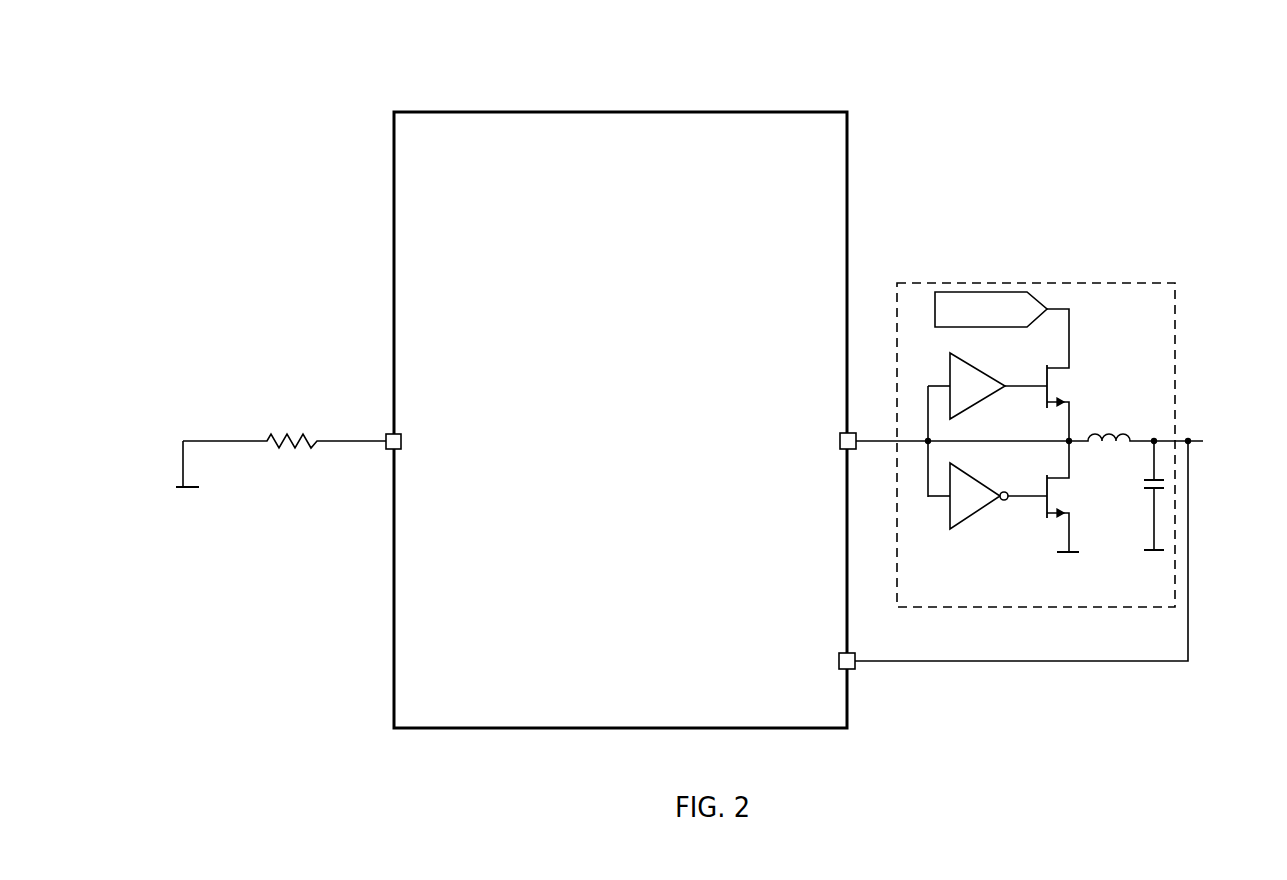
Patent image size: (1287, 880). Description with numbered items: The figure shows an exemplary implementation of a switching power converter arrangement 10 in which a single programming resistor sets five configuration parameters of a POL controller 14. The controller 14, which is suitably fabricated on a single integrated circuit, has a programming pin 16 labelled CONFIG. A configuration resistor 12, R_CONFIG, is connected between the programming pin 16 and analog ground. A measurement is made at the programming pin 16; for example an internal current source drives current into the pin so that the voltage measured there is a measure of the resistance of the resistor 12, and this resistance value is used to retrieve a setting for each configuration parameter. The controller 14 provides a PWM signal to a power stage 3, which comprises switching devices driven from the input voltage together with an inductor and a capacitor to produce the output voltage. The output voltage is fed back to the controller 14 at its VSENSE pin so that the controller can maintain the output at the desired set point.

The point-of-load regulator system 10 is at (272, 154).
The controller 14 is at (835, 208).
The programming pin 16 is at (397, 448).
The configuration resistor R_CONFIG 12 is at (305, 452).
The power stage 3 is at (1100, 308).